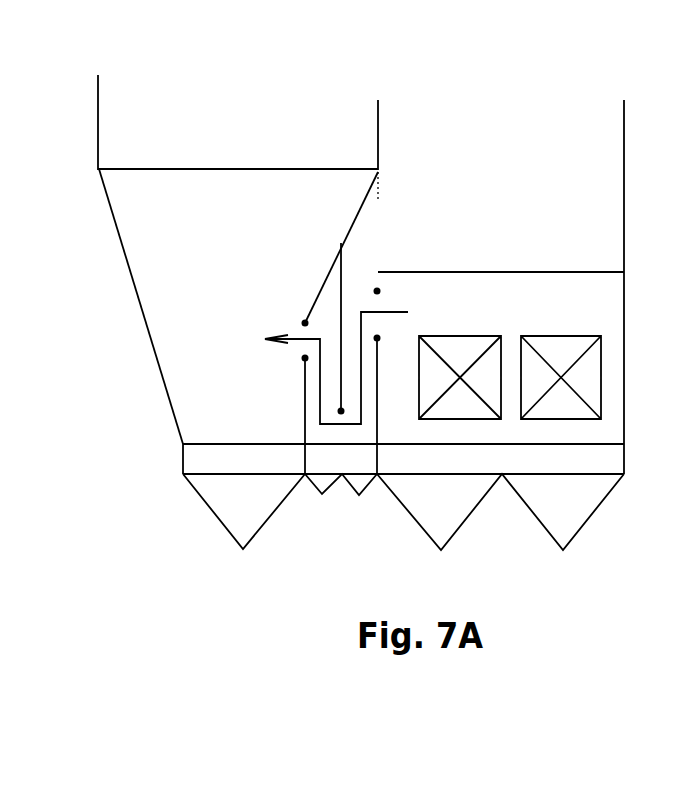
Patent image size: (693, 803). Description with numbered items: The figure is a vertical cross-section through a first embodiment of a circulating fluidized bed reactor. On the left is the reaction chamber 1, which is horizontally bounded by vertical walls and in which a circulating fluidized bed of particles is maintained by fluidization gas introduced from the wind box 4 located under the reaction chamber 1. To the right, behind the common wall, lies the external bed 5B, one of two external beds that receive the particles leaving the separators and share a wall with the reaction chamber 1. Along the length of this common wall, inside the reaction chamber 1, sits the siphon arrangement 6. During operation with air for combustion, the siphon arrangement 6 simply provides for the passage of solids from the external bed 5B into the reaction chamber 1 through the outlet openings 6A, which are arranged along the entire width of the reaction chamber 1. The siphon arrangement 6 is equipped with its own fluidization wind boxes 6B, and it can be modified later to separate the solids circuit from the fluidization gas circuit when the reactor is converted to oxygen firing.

The reaction chamber 1 is at (361, 274).
The wind box 4 is at (403, 497).
The external bed 5B is at (510, 357).
The siphon arrangement 6 is at (378, 240).
The outlet openings 6A is at (299, 350).
The fluidization wind boxes 6B is at (323, 495).